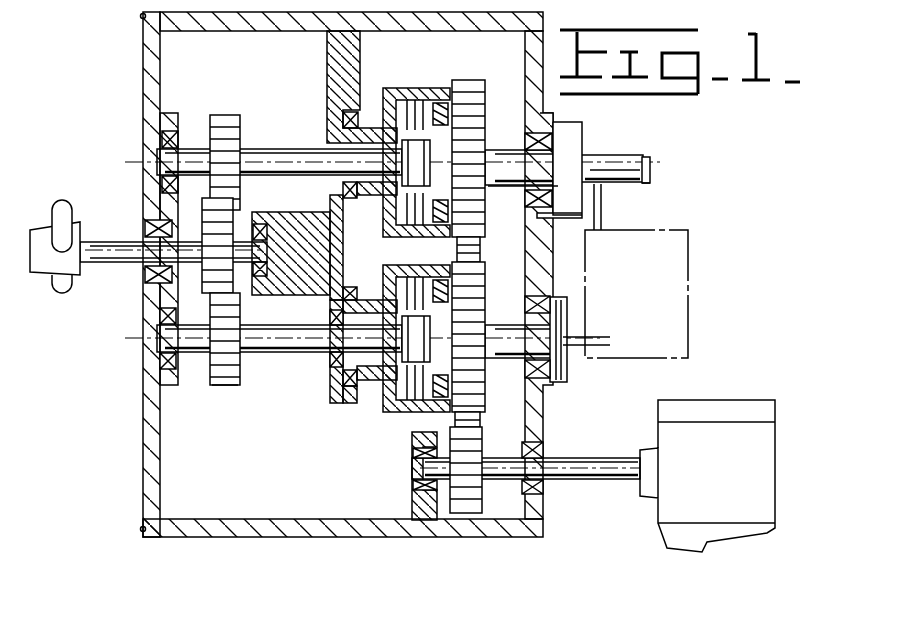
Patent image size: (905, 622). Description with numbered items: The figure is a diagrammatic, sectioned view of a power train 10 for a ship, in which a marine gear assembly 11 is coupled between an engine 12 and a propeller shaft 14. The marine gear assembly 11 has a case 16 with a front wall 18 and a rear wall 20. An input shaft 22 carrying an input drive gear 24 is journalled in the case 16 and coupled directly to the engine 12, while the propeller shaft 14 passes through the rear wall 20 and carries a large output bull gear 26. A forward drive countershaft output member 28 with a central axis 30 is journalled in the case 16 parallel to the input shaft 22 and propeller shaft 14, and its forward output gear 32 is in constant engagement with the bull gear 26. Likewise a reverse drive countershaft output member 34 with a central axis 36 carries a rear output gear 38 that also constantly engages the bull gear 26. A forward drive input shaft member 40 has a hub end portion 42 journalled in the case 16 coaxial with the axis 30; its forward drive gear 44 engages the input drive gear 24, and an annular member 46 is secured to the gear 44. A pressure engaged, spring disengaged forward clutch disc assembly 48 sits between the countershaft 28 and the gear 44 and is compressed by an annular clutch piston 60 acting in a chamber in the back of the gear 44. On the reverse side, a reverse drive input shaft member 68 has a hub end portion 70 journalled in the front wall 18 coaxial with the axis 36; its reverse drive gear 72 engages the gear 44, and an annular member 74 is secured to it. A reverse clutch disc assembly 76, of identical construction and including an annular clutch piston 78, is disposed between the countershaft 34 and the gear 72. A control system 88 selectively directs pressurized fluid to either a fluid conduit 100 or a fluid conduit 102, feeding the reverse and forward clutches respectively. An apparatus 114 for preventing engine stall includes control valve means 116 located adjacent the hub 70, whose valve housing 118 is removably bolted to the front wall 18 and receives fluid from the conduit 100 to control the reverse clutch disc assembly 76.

The power train 10 is at (324, 289).
The marine gear assembly 11 is at (138, 478).
The engine 12 is at (722, 402).
The propeller shaft 14 is at (120, 242).
The case 16 is at (285, 527).
The front wall 18 is at (545, 415).
The rear wall 20 is at (150, 390).
The input shaft 22 is at (570, 474).
The input drive gear 24 is at (466, 514).
The output bull gear 26 is at (200, 272).
The forward drive countershaft output member 28 is at (275, 350).
The central axis 30 is at (196, 364).
The forward output gear 32 is at (228, 386).
The reverse drive countershaft output member 34 is at (300, 158).
The central axis 36 is at (190, 158).
The rear output gear 38 is at (230, 114).
The forward drive input shaft member 40 is at (497, 364).
The hub end portion 42 is at (565, 366).
The forward drive gear 44 is at (418, 430).
The annular member 46 is at (383, 406).
The forward clutch disc assembly 48 is at (378, 280).
The annular clutch piston 60 is at (455, 262).
The reverse drive input shaft member 68 is at (502, 190).
The hub end portion 70 is at (562, 160).
The reverse drive gear 72 is at (486, 96).
The annular member 74 is at (405, 96).
The reverse clutch disc assembly 76 is at (378, 221).
The annular clutch piston 78 is at (440, 108).
The control system 88 is at (690, 304).
The fluid conduit 100 is at (604, 222).
The fluid conduit 102 is at (580, 339).
The apparatus for preventing engine stall 114 is at (646, 152).
The control valve means 116 is at (644, 190).
The valve housing 118 is at (570, 122).